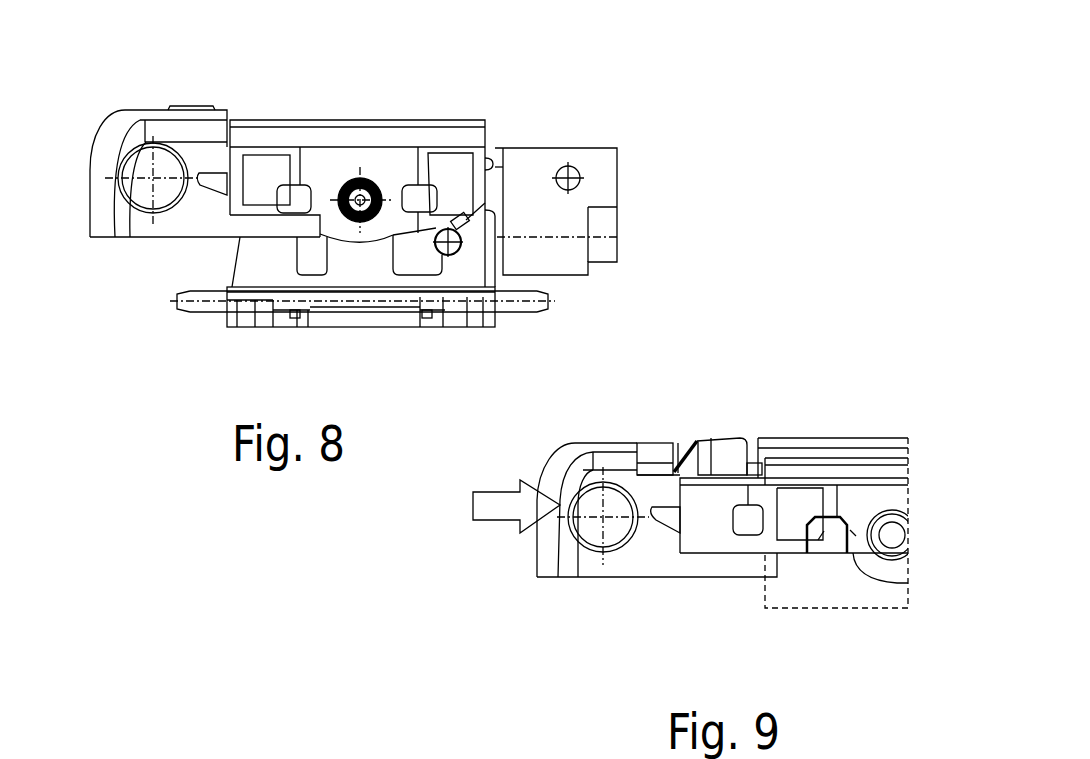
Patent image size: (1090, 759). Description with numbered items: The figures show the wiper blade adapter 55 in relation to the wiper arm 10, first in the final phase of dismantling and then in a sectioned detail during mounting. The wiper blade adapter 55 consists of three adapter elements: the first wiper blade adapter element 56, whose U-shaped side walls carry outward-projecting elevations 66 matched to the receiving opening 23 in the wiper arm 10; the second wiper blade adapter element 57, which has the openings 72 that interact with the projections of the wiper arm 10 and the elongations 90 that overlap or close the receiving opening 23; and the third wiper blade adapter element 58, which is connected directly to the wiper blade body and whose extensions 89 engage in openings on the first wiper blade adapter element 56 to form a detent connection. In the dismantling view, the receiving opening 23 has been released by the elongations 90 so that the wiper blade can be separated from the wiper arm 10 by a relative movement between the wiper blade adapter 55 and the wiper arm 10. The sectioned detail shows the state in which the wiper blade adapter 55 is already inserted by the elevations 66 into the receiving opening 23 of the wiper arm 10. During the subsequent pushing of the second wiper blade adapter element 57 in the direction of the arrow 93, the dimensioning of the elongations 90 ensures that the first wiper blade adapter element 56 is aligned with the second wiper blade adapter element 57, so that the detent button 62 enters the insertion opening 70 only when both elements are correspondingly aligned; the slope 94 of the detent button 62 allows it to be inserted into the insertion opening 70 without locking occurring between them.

In FIG. 9, the wiper arm 10 is at (853, 511).
In FIG. 9, the receiving opening 23 is at (852, 550).
In FIG. 8, the wiper blade adapter 55 is at (339, 223).
In FIG. 9, the wiper blade adapter 55 is at (714, 509).
In FIG. 8, the first wiper blade adapter element 56 is at (410, 133).
In FIG. 9, the first wiper blade adapter element 56 is at (763, 558).
In FIG. 8, the second wiper blade adapter element 57 is at (152, 110).
In FIG. 9, the second wiper blade adapter element 57 is at (645, 562).
In FIG. 8, the third wiper blade adapter element 58 is at (355, 318).
In FIG. 9, the detent button 62 is at (723, 450).
In FIG. 9, the elevation 66 is at (810, 553).
In FIG. 9, the insertion opening 70 is at (673, 445).
In FIG. 9, the opening 72 is at (682, 562).
In FIG. 8, the extension 89 is at (440, 255).
In FIG. 9, the elongation 90 is at (723, 566).
In FIG. 9, the arrow 93 is at (510, 522).
In FIG. 9, the slope 94 is at (689, 442).